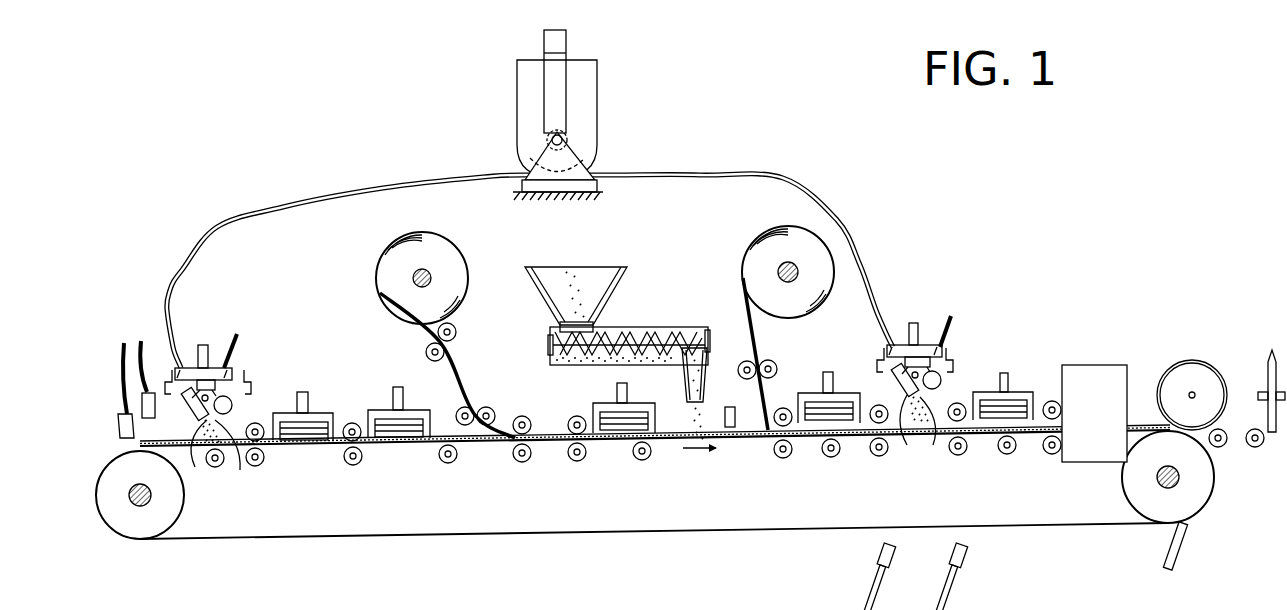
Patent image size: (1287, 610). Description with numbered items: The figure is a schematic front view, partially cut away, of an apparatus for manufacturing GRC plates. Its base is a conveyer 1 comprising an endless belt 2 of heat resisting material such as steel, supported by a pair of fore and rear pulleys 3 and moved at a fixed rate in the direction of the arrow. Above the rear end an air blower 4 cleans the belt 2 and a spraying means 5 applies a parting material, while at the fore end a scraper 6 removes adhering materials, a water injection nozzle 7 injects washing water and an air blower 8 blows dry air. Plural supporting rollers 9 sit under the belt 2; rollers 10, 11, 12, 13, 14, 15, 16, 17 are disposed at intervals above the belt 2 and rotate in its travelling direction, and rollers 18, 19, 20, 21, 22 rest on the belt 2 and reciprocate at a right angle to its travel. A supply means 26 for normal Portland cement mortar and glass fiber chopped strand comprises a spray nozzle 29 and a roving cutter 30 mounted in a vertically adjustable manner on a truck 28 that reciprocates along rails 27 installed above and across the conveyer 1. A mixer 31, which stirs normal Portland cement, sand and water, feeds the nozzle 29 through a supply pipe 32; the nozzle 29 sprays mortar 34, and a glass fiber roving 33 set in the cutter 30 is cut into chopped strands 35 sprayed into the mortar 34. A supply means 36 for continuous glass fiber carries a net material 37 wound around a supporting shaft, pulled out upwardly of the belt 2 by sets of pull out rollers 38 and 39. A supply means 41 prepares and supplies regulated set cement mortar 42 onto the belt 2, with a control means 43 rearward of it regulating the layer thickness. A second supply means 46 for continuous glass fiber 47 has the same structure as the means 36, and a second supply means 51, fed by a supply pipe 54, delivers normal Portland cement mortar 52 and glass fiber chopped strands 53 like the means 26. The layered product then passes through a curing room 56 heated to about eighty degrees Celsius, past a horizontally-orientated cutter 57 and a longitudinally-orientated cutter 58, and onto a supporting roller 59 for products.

The conveyer 1 is at (658, 534).
The endless belt 2 is at (300, 537).
The pulleys 3 is at (133, 525).
The air blower 4 is at (120, 425).
The parting material spraying means 5 is at (152, 385).
The scraper 6 is at (1186, 543).
The water injection nozzle 7 is at (972, 552).
The air blower 8 is at (900, 552).
The supporting rollers 9 is at (262, 464).
The roller 10 is at (263, 425).
The roller 11 is at (350, 423).
The roller 12 is at (524, 416).
The roller 13 is at (577, 416).
The roller 14 is at (785, 408).
The roller 15 is at (882, 424).
The roller 16 is at (964, 406).
The roller 17 is at (1052, 400).
The reciprocating roller 18 is at (305, 430).
The reciprocating roller 19 is at (398, 430).
The reciprocating roller 20 is at (622, 425).
The reciprocating roller 21 is at (838, 418).
The reciprocating roller 22 is at (1017, 400).
The supply means for normal Portland cement mortar and glass fiber chopped strand 26 is at (565, 384).
The rails 27 is at (248, 383).
The truck 28 is at (206, 345).
The spray nozzle 29 is at (186, 412).
The roving cutter 30 is at (233, 411).
The mixer 31 is at (603, 98).
The supply pipe 32 is at (404, 185).
The glass fiber roving 33 is at (238, 337).
The mortar 34 is at (198, 457).
The chopped strands 35 is at (233, 459).
The supply means for continuous glass fiber 36 is at (470, 273).
The net material 37 is at (460, 362).
The pull out rollers 38 is at (452, 324).
The pull out rollers 39 is at (458, 410).
The supply means for regulated set cement mortar 41 is at (617, 351).
The regulated set cement mortar 42 is at (687, 412).
The control means 43 is at (730, 430).
The supply means for continuous glass fiber 46 is at (741, 258).
The continuous glass fiber 47 is at (743, 305).
The supply means for normal Portland cement mortar and glass fiber chopped strand 51 is at (916, 366).
The normal Portland cement mortar 52 is at (913, 449).
The glass fiber chopped strands 53 is at (937, 439).
The supply pipe 54 is at (750, 176).
The curing room 56 is at (1092, 361).
The horizontally-orientated cutter 57 is at (1190, 370).
The longitudinally-orientated cutter 58 is at (1268, 370).
The supporting roller 59 is at (1220, 448).